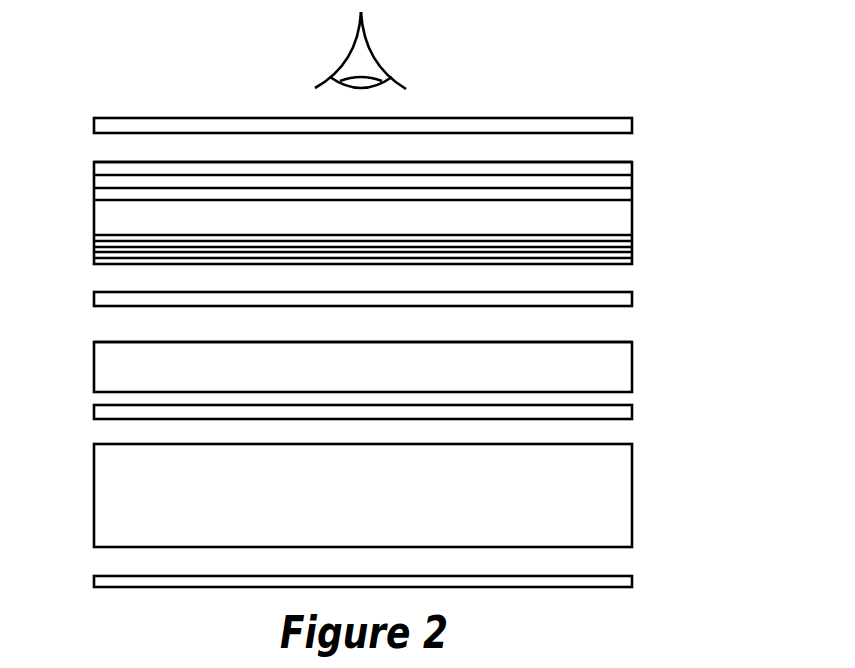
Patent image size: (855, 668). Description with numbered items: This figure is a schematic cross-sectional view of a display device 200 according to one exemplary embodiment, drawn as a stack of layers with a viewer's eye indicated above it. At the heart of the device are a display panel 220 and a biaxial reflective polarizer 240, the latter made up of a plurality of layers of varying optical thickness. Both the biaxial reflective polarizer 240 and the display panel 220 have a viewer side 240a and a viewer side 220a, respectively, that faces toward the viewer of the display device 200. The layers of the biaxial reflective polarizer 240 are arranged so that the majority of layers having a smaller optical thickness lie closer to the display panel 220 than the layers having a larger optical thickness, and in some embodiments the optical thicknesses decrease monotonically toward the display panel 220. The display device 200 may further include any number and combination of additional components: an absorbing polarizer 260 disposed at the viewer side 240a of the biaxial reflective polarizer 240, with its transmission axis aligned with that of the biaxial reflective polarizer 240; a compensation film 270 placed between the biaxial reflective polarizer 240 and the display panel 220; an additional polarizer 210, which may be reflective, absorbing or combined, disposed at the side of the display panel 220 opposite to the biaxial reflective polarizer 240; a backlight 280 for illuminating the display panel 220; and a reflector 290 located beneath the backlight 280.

The display device 200 is at (541, 72).
The absorbing polarizer 260 is at (632, 124).
The biaxial reflective polarizer 240 is at (94, 212).
The viewer side of the biaxial reflective polarizer 240a is at (110, 162).
The compensation film 270 is at (632, 297).
The display panel 220 is at (632, 368).
The viewer side of the display panel 220a is at (605, 342).
The additional polarizer 210 is at (632, 414).
The backlight 280 is at (632, 492).
The reflector 290 is at (632, 582).